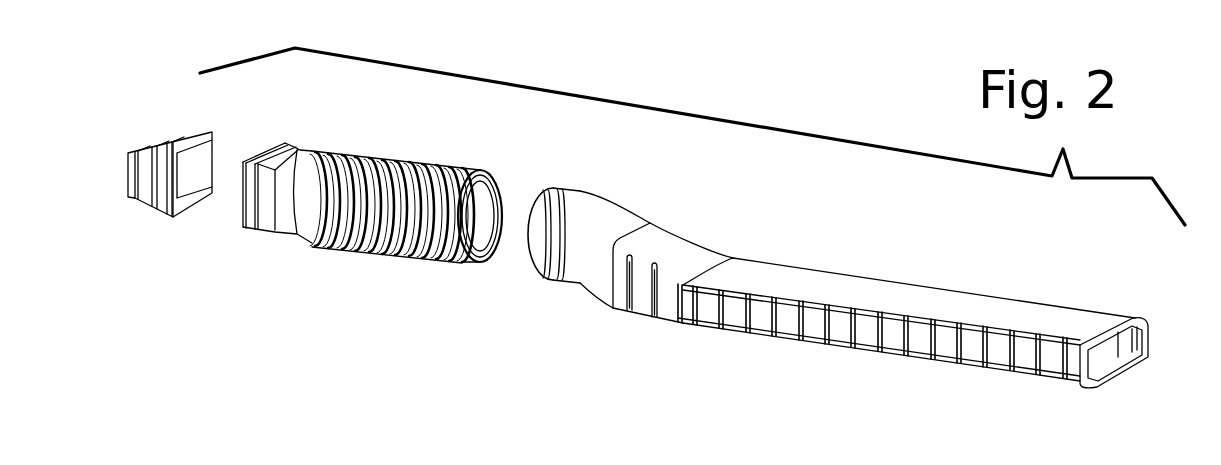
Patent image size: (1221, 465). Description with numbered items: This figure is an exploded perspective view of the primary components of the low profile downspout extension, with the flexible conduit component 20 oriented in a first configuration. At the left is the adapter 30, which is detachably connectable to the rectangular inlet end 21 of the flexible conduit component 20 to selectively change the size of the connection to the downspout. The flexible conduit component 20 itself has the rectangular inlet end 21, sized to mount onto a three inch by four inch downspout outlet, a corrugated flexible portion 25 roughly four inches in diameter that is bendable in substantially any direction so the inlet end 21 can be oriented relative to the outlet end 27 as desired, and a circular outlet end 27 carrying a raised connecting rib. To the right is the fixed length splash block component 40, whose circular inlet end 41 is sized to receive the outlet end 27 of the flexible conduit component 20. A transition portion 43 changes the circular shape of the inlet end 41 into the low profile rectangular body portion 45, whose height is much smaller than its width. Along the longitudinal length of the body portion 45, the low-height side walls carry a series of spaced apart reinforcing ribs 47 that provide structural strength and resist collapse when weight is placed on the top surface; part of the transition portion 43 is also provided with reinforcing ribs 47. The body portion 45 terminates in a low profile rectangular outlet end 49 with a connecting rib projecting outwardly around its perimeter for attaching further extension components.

The flexible conduit component 20 is at (359, 204).
The inlet end 21 is at (257, 229).
The corrugated flexible portion 25 is at (402, 258).
The circular outlet end 27 is at (466, 262).
The adapter 30 is at (172, 137).
The splash block component 40 is at (856, 272).
The inlet end 41 is at (560, 188).
The transition portion 43 is at (645, 224).
The body portion 45 is at (862, 288).
The reinforcing ribs 47 is at (740, 310).
The outlet end 49 is at (1120, 375).